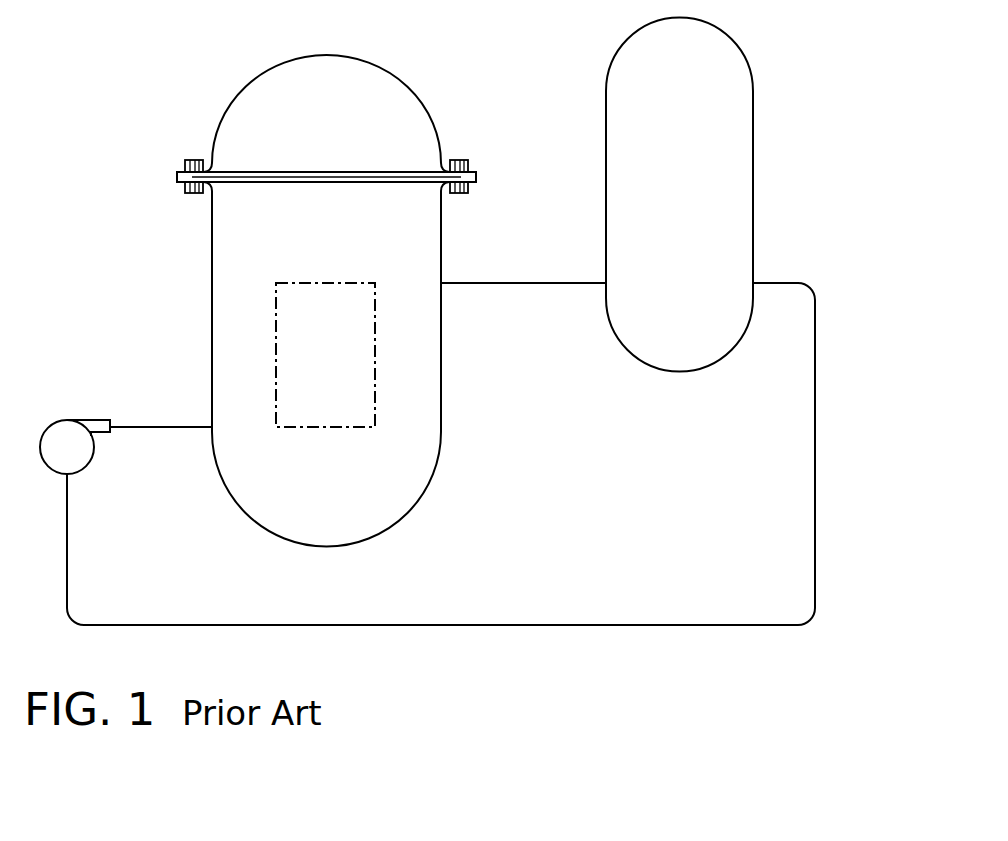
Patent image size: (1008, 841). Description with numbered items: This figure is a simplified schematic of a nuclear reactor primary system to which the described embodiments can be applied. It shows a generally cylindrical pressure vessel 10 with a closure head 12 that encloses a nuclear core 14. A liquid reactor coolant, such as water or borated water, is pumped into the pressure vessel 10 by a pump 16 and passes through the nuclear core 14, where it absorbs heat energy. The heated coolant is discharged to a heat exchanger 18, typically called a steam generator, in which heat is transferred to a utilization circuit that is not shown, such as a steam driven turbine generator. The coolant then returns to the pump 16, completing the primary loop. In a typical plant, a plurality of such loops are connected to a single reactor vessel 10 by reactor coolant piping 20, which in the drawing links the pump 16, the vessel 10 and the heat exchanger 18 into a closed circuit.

The pressure vessel 10 is at (340, 367).
The closure head 12 is at (225, 116).
The nuclear core 14 is at (276, 342).
The pump 16 is at (62, 420).
The heat exchanger 18 is at (753, 129).
The reactor coolant piping 20 is at (815, 550).